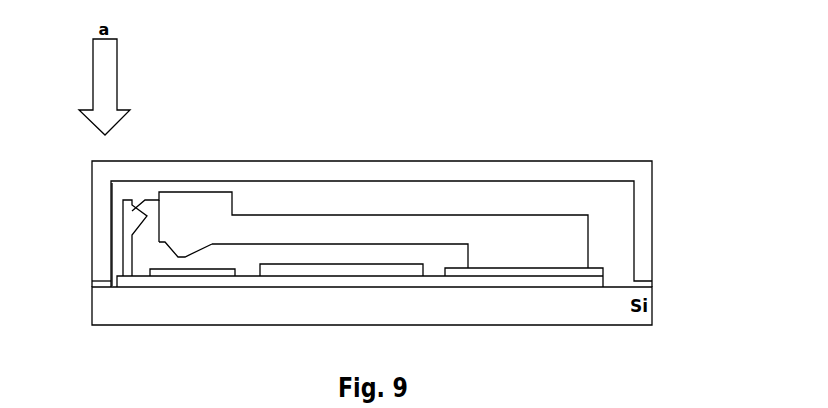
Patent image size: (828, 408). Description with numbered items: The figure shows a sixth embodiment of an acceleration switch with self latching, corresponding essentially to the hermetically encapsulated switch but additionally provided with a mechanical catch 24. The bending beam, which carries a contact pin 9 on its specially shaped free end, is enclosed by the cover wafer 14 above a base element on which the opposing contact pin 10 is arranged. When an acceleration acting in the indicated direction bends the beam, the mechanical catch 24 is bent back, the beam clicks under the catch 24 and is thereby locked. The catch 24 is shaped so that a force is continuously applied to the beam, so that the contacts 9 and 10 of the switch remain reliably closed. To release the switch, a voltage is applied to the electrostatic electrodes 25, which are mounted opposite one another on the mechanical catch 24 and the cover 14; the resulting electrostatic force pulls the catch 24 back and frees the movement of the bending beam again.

The contact pin 9 is at (180, 257).
The contact pin 10 is at (193, 265).
The cover wafer 14 is at (565, 168).
The mechanical catch 24 is at (133, 201).
The electrostatic electrodes 25 is at (114, 215).